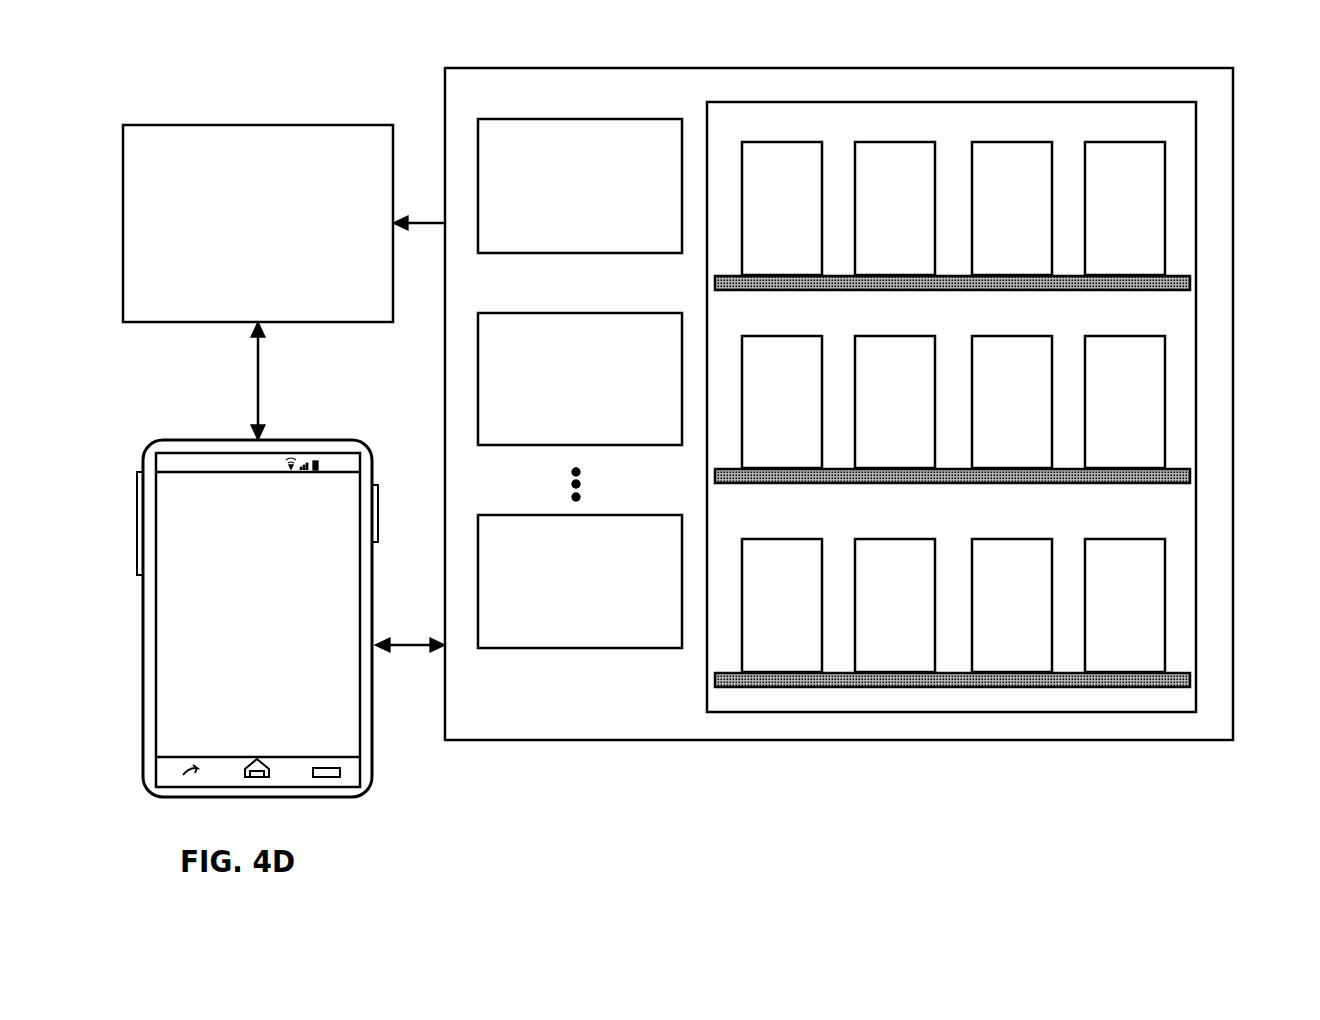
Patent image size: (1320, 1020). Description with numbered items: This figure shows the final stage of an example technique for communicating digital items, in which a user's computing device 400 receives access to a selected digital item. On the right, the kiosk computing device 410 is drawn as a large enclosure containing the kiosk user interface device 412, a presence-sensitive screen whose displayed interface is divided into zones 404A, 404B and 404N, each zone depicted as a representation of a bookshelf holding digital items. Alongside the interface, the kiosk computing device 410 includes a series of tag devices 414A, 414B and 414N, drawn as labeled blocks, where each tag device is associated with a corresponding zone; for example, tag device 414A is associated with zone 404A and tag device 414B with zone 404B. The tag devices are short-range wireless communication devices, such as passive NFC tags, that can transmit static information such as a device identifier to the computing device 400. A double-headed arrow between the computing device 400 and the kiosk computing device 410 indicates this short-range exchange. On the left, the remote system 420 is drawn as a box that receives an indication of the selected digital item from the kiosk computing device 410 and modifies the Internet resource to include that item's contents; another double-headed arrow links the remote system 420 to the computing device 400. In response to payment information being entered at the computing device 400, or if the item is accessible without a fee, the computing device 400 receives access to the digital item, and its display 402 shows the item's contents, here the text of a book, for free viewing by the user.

The computing device 400 is at (283, 604).
The display 402 is at (373, 462).
The kiosk computing device 410 is at (1235, 150).
The kiosk user interface device 412 is at (1082, 100).
The zone 404A is at (715, 282).
The zone 404B is at (715, 475).
The zone 404N is at (715, 679).
The tag device 414A is at (580, 186).
The tag device 414B is at (580, 379).
The tag device 414N is at (580, 581).
The remote system 420 is at (258, 223).